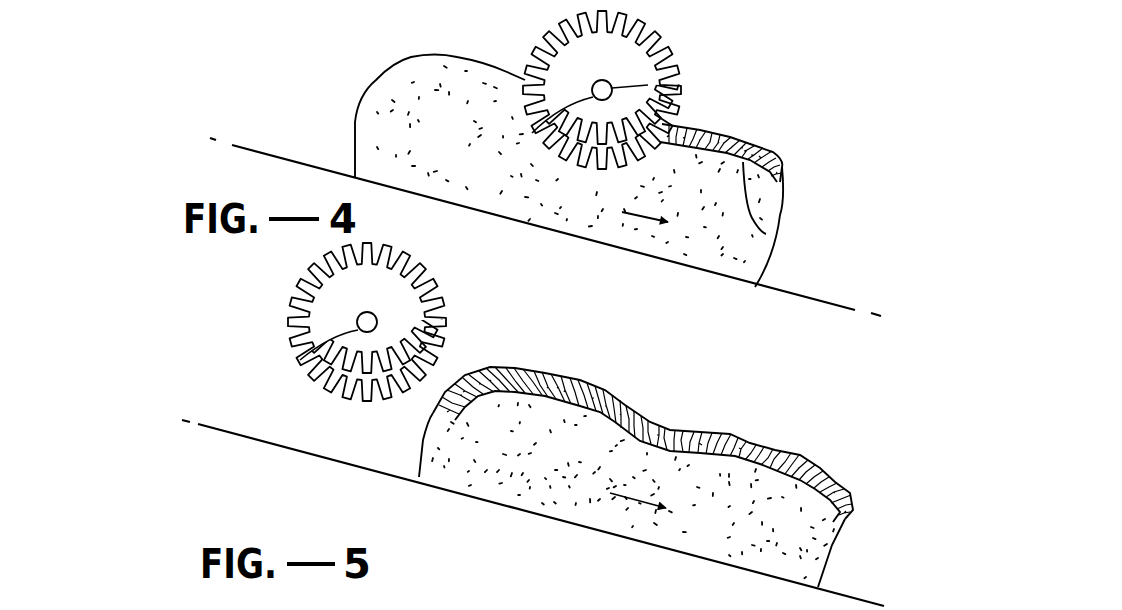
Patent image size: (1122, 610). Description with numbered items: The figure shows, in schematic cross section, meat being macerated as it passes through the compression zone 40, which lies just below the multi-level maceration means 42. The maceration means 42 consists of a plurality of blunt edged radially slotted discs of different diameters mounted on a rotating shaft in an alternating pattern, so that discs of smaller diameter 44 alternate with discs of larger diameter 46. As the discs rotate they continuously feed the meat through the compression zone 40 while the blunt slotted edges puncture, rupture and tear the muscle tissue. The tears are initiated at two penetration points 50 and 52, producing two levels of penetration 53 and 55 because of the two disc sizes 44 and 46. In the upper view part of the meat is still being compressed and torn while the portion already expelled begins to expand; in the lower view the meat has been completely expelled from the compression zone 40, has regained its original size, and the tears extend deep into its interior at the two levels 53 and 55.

In FIG. 4, the compression zone 40 is at (553, 200).
In FIG. 5, the compression zone 40 is at (315, 410).
In FIG. 4, the multi-level maceration means 42 is at (591, 84).
In FIG. 5, the multi-level maceration means 42 is at (360, 308).
In FIG. 4, the discs of smaller diameter 44 is at (648, 85).
In FIG. 5, the discs of smaller diameter 44 is at (405, 342).
In FIG. 4, the discs of larger diameter 46 is at (648, 56).
In FIG. 5, the discs of larger diameter 46 is at (377, 322).
In FIG. 4, the penetration point 50 is at (750, 174).
In FIG. 5, the penetration point 50 is at (643, 427).
In FIG. 4, the penetration point 52 is at (770, 152).
In FIG. 5, the penetration point 52 is at (557, 373).
In FIG. 4, the level of penetration 53 is at (757, 178).
In FIG. 5, the level of penetration 53 is at (537, 403).
In FIG. 4, the level of penetration 55 is at (766, 234).
In FIG. 5, the level of penetration 55 is at (603, 417).